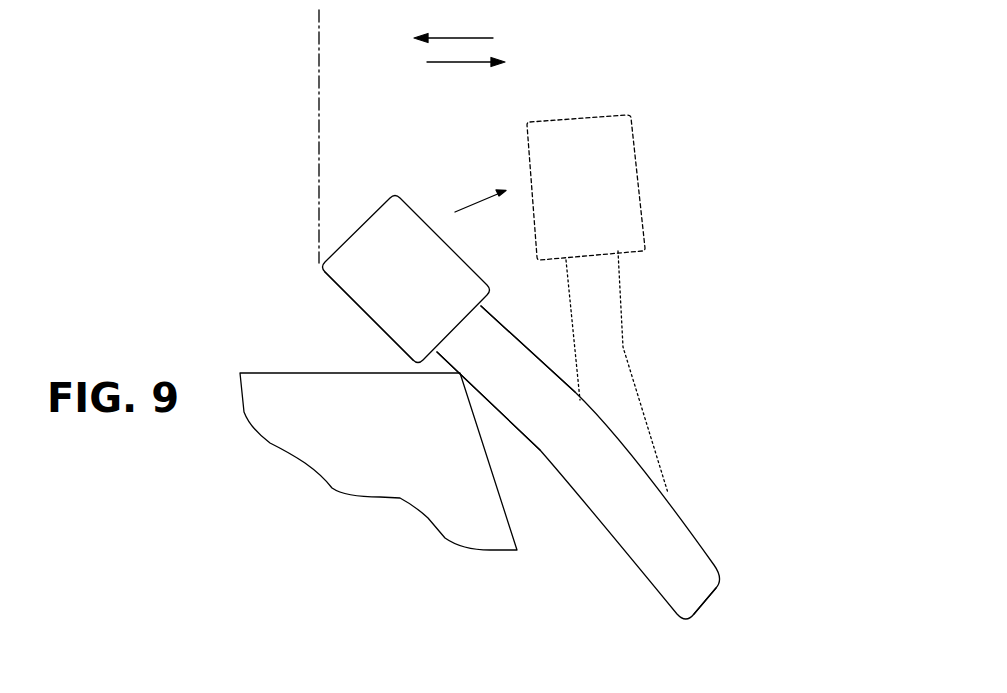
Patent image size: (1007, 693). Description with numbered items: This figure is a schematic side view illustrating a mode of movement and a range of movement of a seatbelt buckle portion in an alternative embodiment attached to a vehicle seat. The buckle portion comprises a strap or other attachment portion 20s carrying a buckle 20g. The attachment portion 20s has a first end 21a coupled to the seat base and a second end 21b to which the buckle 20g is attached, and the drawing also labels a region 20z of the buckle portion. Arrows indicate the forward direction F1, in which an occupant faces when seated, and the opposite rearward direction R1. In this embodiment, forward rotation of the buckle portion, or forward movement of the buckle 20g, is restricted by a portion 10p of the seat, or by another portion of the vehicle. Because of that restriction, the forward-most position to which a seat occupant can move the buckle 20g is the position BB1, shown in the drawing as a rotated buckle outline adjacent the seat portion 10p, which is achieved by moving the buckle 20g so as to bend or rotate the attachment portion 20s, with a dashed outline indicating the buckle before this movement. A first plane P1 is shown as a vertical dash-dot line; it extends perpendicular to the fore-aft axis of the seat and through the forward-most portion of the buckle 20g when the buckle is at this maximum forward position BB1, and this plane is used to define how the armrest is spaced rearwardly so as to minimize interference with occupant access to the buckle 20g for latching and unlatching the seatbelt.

The first plane P1 is at (318, 77).
The forward direction F1 is at (452, 38).
The rearward direction R1 is at (467, 62).
The forward-most position of the buckle BB1 is at (406, 279).
The portion of the seat 10p is at (412, 428).
The buckle 20g is at (367, 315).
The attachment portion 20s is at (515, 388).
The pedal arm end portion 20z is at (698, 577).
The first end 21a is at (723, 593).
The second end 21b is at (473, 333).